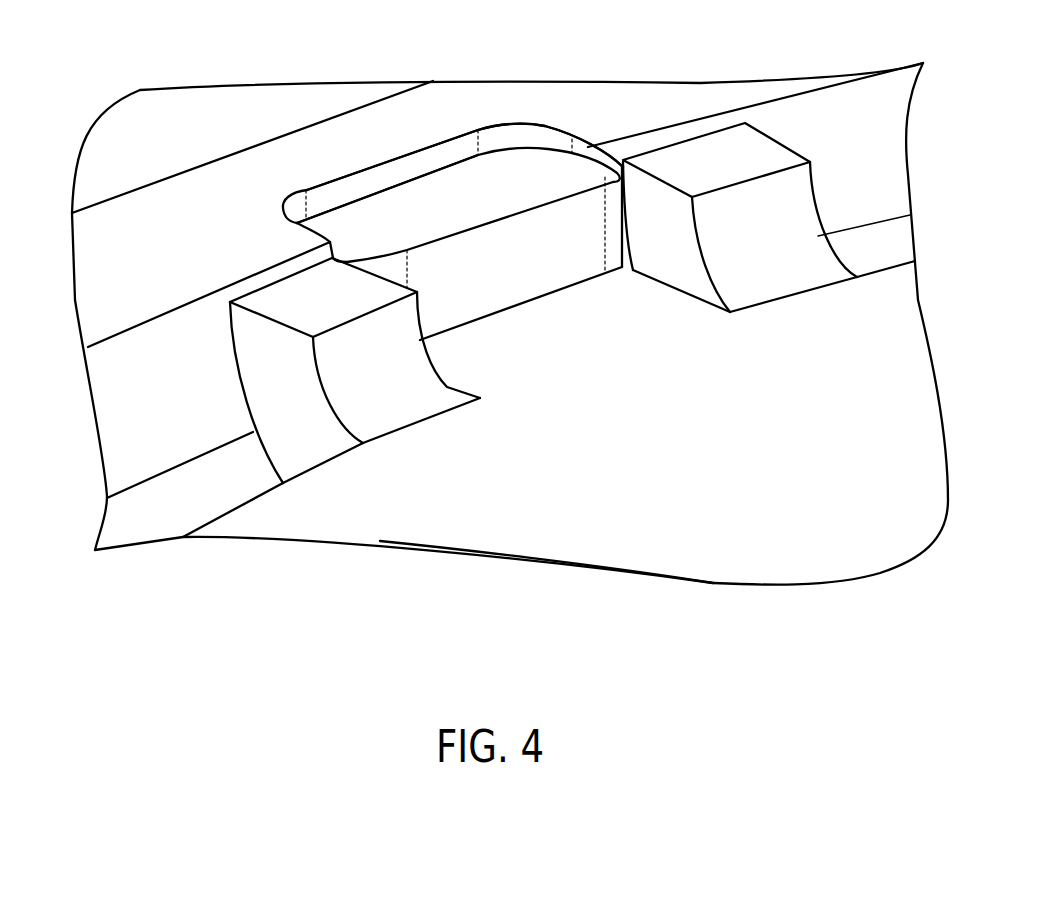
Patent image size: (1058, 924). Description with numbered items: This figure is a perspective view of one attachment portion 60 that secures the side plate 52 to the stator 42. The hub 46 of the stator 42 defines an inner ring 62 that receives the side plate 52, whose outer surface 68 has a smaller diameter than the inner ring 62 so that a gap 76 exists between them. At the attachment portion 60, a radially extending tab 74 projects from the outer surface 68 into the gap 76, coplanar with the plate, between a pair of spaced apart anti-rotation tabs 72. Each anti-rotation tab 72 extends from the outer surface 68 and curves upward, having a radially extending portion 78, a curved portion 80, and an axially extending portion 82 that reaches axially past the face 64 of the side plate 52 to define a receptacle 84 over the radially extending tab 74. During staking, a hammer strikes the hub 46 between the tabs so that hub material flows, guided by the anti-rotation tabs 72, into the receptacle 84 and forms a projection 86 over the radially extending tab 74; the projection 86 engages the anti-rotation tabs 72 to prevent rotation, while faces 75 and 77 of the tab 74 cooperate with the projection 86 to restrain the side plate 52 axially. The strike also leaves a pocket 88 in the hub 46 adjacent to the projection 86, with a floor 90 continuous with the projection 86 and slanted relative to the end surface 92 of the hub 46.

The stator 42 is at (107, 320).
The hub 46 is at (480, 97).
The side plate 52 is at (713, 570).
The attachment portion 60 is at (216, 228).
The inner ring 62 is at (825, 132).
The face 64 is at (871, 439).
The outer surface 68 is at (212, 520).
The anti-rotation tab 72 is at (722, 150).
The radially extending tab 74 is at (475, 333).
The face of the radially extending tab 75 is at (519, 359).
The gap 76 is at (236, 487).
The face of the radially extending tab 77 is at (563, 293).
The radially extending portion 78 is at (800, 283).
The curved portion 80 is at (790, 228).
The axially extending portion 82 is at (262, 335).
The receptacle 84 is at (631, 312).
The projection 86 is at (586, 177).
The pocket 88 is at (407, 173).
The floor 90 is at (380, 212).
The end surface 92 is at (173, 257).